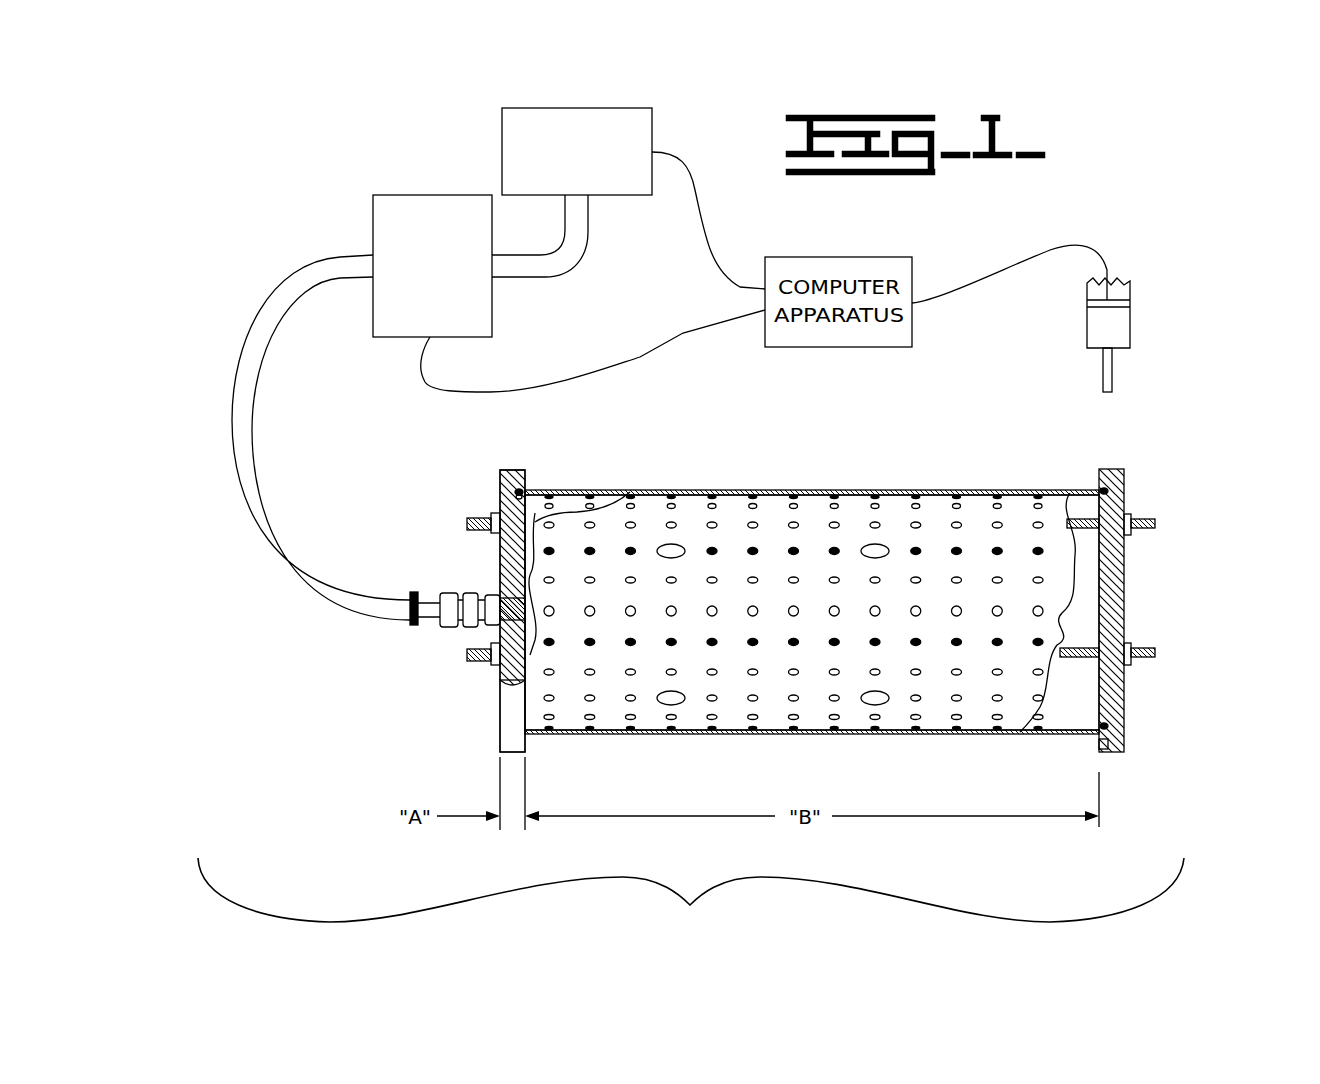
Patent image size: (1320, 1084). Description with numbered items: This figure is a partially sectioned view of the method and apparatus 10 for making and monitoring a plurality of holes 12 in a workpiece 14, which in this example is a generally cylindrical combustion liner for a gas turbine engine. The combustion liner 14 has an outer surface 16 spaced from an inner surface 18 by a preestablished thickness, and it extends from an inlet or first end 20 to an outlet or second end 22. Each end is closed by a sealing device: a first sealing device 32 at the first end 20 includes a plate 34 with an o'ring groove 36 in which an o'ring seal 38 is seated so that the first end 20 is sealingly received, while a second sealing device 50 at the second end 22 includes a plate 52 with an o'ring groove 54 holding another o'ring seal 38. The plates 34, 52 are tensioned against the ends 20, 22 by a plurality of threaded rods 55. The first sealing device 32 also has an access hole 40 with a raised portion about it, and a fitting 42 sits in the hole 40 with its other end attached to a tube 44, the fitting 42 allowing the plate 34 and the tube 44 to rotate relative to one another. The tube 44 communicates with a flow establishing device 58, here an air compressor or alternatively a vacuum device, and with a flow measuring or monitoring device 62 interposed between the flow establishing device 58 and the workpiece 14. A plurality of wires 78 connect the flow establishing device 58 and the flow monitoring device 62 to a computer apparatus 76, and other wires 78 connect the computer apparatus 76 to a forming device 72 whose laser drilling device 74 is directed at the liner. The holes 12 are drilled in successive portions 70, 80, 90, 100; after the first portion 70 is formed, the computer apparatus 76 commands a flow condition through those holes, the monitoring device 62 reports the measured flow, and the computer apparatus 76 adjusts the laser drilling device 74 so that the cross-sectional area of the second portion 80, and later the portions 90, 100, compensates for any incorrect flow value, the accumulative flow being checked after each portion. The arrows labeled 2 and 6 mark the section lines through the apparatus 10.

The section line 2- 2 is at (503, 572).
The section line 6- 6 is at (773, 636).
The method and apparatus 10 is at (1133, 234).
The plurality of holes 12 is at (840, 507).
The workpiece 14 is at (935, 530).
The outer surface 16 is at (983, 490).
The inner surface 18 is at (1043, 732).
The first end 20 is at (515, 497).
The second end 22 is at (1123, 490).
The first sealing device 32 is at (506, 455).
The plate 34 is at (497, 707).
The o'ring groove 36 is at (517, 493).
The o'ring seal 38 is at (468, 522).
The access hole 40 is at (523, 602).
The fitting 42 is at (470, 627).
The tube 44 is at (375, 615).
The second sealing device 50 is at (1145, 447).
The plate 52 is at (1112, 683).
The o'ring groove 54 is at (1107, 731).
The threaded rods 55 is at (1087, 647).
The flow establishing device 58 is at (502, 143).
The flow measuring or monitoring device 62 is at (373, 197).
The first portion of the plurality of holes 70 is at (550, 698).
The forming device 72 is at (1121, 338).
The laser drilling device 74 is at (1112, 378).
The computer apparatus 76 is at (912, 275).
The plurality of wires 78 is at (696, 223).
The second portion of the plurality of holes 80 is at (590, 552).
The portion of the plurality of holes 90 is at (631, 698).
The portion of the plurality of holes 100 is at (718, 490).